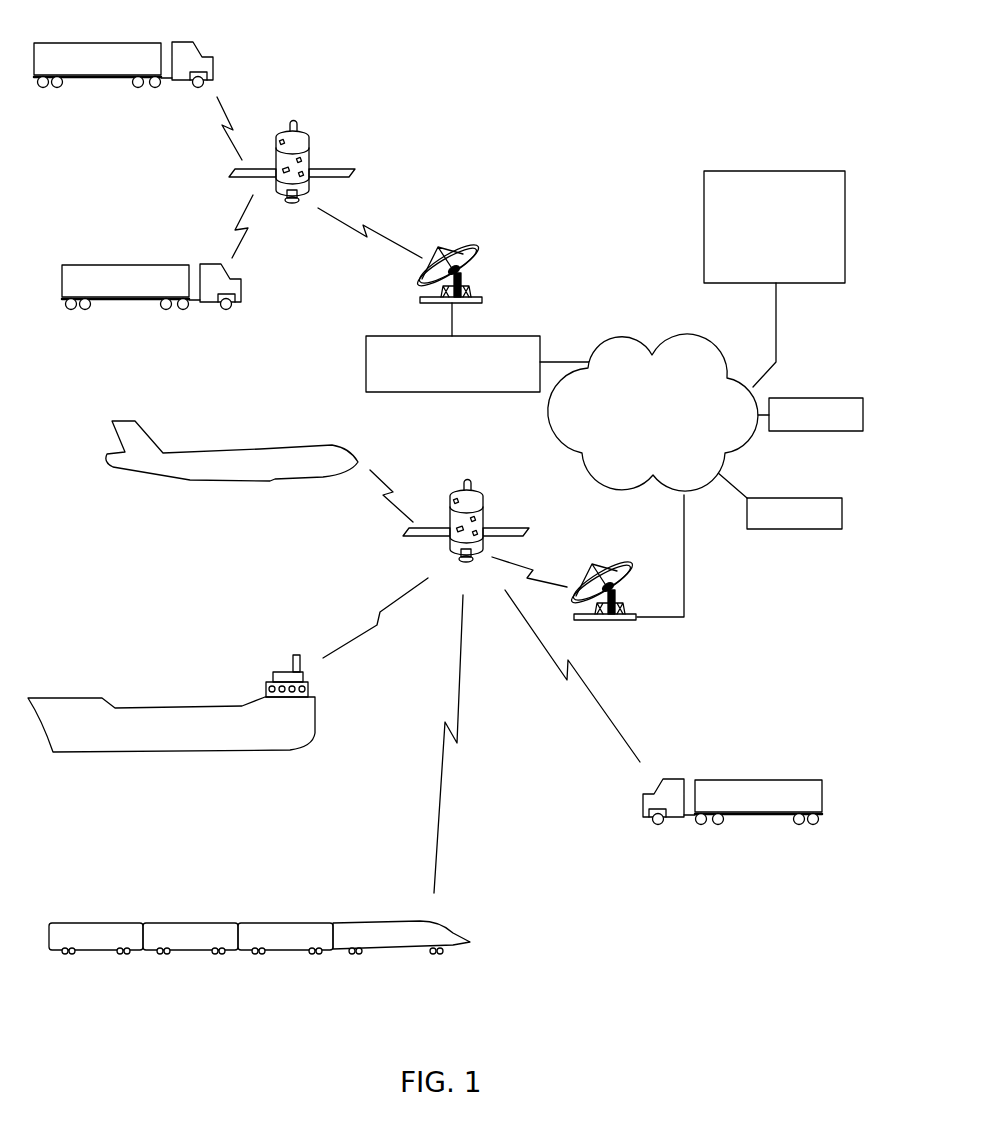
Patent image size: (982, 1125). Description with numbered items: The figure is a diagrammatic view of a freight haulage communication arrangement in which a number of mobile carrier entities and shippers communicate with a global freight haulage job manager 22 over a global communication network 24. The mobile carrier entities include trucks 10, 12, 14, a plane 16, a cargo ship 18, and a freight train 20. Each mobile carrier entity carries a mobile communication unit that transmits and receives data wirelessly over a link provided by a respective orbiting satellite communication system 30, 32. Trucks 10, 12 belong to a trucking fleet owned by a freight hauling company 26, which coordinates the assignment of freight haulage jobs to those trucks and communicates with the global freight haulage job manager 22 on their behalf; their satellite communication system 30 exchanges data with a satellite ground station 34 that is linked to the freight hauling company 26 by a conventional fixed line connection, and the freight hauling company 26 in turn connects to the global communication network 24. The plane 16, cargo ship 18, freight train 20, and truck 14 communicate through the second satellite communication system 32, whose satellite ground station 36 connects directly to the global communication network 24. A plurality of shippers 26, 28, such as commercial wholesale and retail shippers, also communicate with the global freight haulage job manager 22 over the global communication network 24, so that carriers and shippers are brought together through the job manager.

The truck 10 is at (98, 43).
The truck 12 is at (127, 262).
The truck 14 is at (760, 777).
The plane 16 is at (263, 480).
The cargo ship 18 is at (157, 752).
The freight train 20 is at (458, 930).
The global freight haulage job manager 22 is at (703, 228).
The global communication network 24 is at (624, 340).
The freight hauling company 26 is at (366, 360).
The shipper 28 is at (825, 373).
The satellite communication system 30 is at (348, 168).
The satellite communication system 32 is at (523, 528).
The satellite ground station 34 is at (487, 298).
The satellite ground station 36 is at (622, 620).